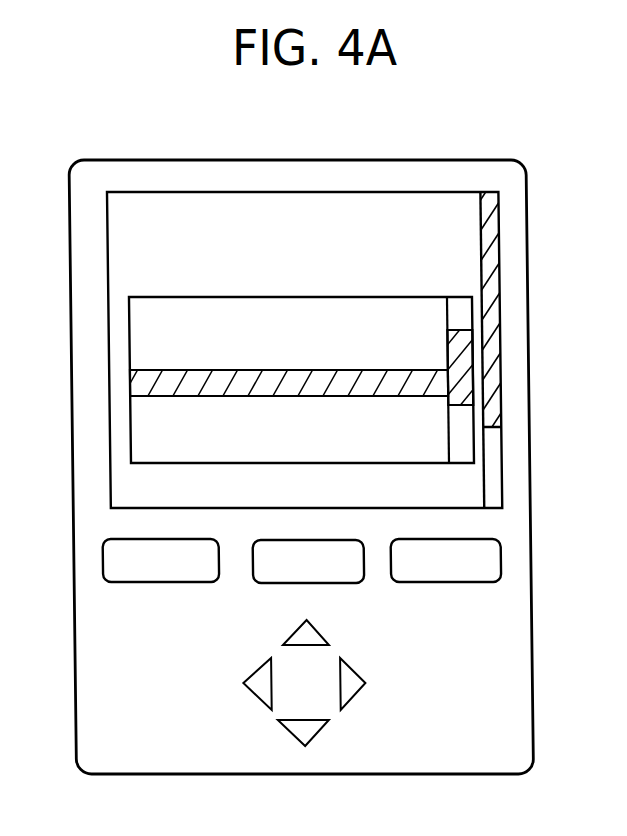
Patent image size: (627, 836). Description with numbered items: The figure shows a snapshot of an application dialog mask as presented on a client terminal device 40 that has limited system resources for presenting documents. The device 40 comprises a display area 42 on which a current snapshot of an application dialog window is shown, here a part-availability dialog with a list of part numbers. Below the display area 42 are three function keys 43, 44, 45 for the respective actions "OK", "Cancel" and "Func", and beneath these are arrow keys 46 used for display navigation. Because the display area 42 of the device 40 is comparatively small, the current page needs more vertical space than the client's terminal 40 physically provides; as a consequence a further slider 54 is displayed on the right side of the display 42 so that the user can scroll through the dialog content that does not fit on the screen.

The client terminal device 40 is at (229, 145).
The display area 42 is at (471, 277).
The function key 43 is at (102, 572).
The function key 44 is at (357, 580).
The function key 45 is at (503, 570).
The arrow keys 46 is at (266, 730).
The slider 54 is at (498, 278).